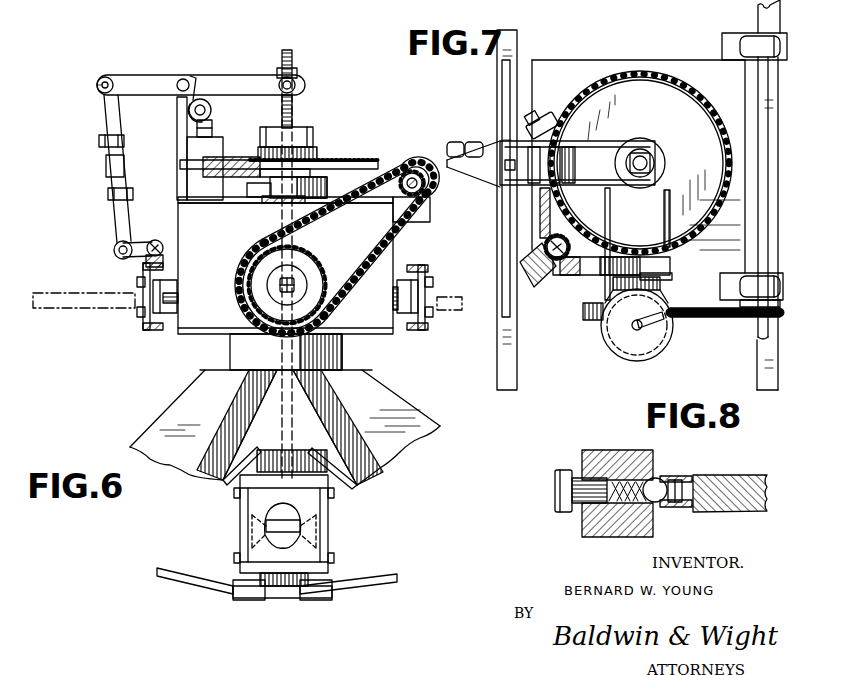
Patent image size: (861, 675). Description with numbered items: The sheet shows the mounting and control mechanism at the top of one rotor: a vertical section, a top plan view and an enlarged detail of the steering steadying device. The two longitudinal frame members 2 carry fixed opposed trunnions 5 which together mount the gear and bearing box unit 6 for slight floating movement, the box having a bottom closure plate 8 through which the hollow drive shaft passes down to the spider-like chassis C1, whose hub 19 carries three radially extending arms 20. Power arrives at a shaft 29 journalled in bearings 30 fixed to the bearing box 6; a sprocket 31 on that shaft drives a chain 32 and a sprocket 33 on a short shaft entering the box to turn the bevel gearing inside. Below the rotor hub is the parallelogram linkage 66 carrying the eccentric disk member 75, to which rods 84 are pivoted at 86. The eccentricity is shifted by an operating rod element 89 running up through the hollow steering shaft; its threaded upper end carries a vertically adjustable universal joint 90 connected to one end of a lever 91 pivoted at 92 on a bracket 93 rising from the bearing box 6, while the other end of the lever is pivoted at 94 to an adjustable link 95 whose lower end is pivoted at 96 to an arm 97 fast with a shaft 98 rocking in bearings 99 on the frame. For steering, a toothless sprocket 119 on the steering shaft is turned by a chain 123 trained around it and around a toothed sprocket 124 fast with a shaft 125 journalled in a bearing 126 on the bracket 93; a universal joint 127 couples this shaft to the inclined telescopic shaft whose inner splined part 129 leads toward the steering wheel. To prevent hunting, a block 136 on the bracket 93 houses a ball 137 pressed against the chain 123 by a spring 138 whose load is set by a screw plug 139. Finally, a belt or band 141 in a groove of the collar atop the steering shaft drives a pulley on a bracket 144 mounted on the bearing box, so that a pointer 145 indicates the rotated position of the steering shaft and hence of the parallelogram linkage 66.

In FIG. 6, the longitudinal frame member 2 is at (143, 266).
In FIG. 6, the trunnion 5 is at (174, 292).
In FIG. 7, the trunnion 5 is at (512, 195).
In FIG. 6, the gear and bearing box unit 6 is at (207, 305).
In FIG. 7, the gear and bearing box unit 6 is at (680, 60).
In FIG. 7, the bottom closure plate 8 is at (522, 92).
In FIG. 6, the hub 19 is at (264, 408).
In FIG. 6, the radially extending arm 20 is at (172, 415).
In FIG. 6, the chassis C1 is at (450, 412).
In FIG. 6, the shaft 29 is at (412, 178).
In FIG. 7, the shaft 29 is at (759, 257).
In FIG. 7, the bearing 30 is at (744, 42).
In FIG. 6, the sprocket 31 is at (397, 203).
In FIG. 6, the chain 32 is at (361, 260).
In FIG. 6, the sprocket 33 is at (312, 246).
In FIG. 6, the parallelogram linkage 66 is at (334, 536).
In FIG. 6, the disk member 75 is at (288, 598).
In FIG. 6, the rod 84 is at (198, 580).
In FIG. 6, the pivot 86 is at (253, 598).
In FIG. 6, the operating rod element 89 is at (293, 117).
In FIG. 6, the universal joint 90 is at (297, 80).
In FIG. 7, the universal joint 90 is at (652, 152).
In FIG. 6, the lever 91 is at (243, 83).
In FIG. 6, the pivot 92 is at (185, 79).
In FIG. 6, the bracket 93 is at (177, 108).
In FIG. 7, the bracket 93 is at (518, 213).
In FIG. 6, the pivot 94 is at (105, 77).
In FIG. 6, the adjustable link 95 is at (105, 120).
In FIG. 6, the pivot 96 is at (117, 246).
In FIG. 6, the arm 97 is at (142, 241).
In FIG. 6, the shaft 98 is at (159, 241).
In FIG. 6, the bearing 99 is at (163, 257).
In FIG. 6, the toothless sprocket 119 is at (352, 162).
In FIG. 7, the toothless sprocket 119 is at (708, 130).
In FIG. 8, the toothless sprocket 119 is at (733, 476).
In FIG. 6, the chain 123 is at (384, 160).
In FIG. 7, the chain 123 is at (633, 74).
In FIG. 8, the chain 123 is at (684, 475).
In FIG. 6, the toothed sprocket 124 is at (203, 175).
In FIG. 7, the toothed sprocket 124 is at (555, 228).
In FIG. 6, the shaft 125 is at (212, 133).
In FIG. 7, the shaft 125 is at (575, 240).
In FIG. 6, the bearing 126 is at (217, 152).
In FIG. 6, the universal joint 127 is at (189, 115).
In FIG. 6, the inner splined part 129 is at (196, 76).
In FIG. 7, the block 136 is at (548, 119).
In FIG. 8, the block 136 is at (628, 462).
In FIG. 8, the ball 137 is at (660, 506).
In FIG. 8, the spring 138 is at (632, 524).
In FIG. 7, the screw plug 139 is at (533, 110).
In FIG. 8, the screw plug 139 is at (555, 498).
In FIG. 7, the belt or band 141 is at (608, 236).
In FIG. 7, the bracket 144 is at (655, 278).
In FIG. 7, the pointer 145 is at (657, 345).